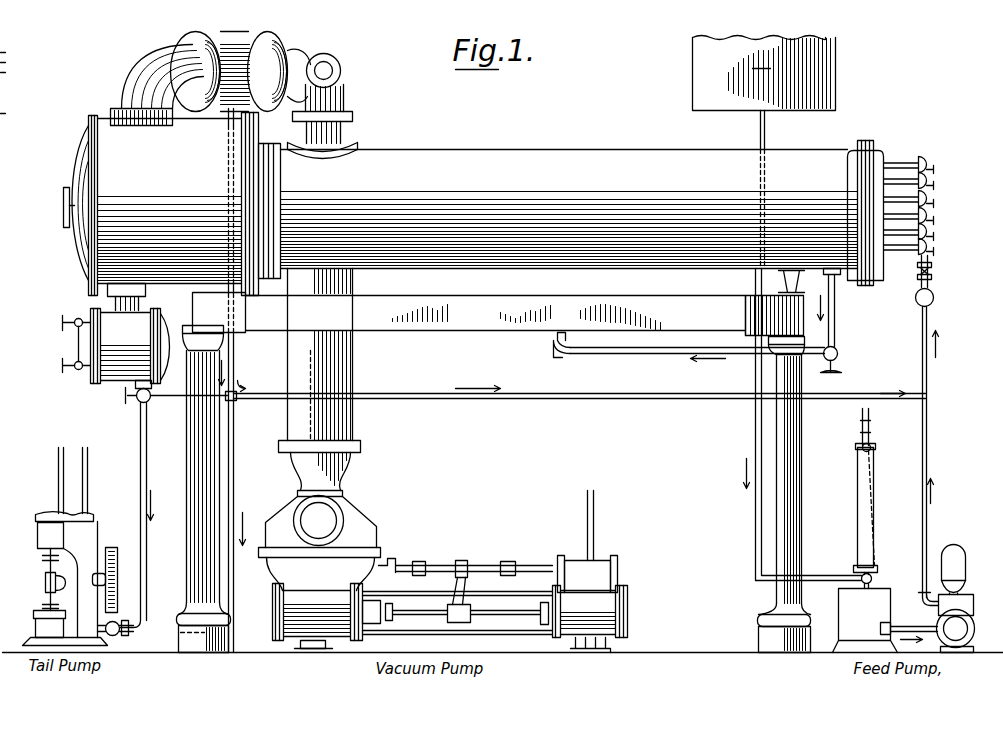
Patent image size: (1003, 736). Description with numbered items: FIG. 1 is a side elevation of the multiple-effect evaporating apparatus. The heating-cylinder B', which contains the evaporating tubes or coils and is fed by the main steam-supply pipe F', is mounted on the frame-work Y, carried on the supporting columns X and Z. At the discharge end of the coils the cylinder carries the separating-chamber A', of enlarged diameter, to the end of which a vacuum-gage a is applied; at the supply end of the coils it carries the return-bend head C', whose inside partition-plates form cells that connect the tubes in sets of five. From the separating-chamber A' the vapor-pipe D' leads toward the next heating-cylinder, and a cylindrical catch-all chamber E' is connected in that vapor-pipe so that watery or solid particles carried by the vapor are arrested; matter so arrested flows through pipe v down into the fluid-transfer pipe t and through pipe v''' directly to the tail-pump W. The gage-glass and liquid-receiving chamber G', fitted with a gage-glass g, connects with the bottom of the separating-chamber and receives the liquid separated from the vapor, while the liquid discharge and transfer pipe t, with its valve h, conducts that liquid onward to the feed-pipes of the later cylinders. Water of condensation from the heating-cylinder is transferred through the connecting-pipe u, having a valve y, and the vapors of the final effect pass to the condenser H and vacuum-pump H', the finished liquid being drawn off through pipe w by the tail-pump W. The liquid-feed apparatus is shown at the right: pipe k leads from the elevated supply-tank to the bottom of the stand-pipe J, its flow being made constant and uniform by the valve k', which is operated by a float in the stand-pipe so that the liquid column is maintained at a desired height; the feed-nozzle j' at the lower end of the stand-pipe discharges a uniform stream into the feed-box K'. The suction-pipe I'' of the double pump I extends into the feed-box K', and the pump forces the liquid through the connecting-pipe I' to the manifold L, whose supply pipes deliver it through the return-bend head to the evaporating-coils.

The separating-chamber A' is at (165, 204).
The vacuum-gage a is at (61, 208).
The heating-cylinder B' is at (558, 218).
The return-bend head C' is at (891, 213).
The vapor-pipe D' is at (157, 85).
The catch-all chamber E' is at (229, 72).
The main steam-supply pipe F' is at (323, 99).
The gage-glass and liquid-receiving chamber G' is at (130, 334).
The gage-glass g is at (75, 344).
The valve h is at (169, 392).
The pipe w is at (143, 515).
The pipe v is at (233, 381).
The pipe v''' is at (204, 554).
The liquid discharge and transfer pipe t is at (580, 387).
The frame-work Y is at (498, 314).
The column X is at (204, 489).
The column Z is at (784, 495).
The condenser H is at (320, 361).
The vacuum-pump H' is at (443, 553).
The tail-pump W is at (73, 547).
The pipe k is at (777, 308).
The connecting-pipe u is at (701, 320).
The valve y is at (836, 360).
The manifold L is at (931, 427).
The connecting-pipe I' is at (931, 542).
The stand-pipe J is at (858, 491).
The feed-nozzle j' is at (858, 438).
The valve k' is at (878, 573).
The feed-box K' is at (865, 621).
The suction-pipe I'' is at (909, 626).
The double pump I is at (958, 599).